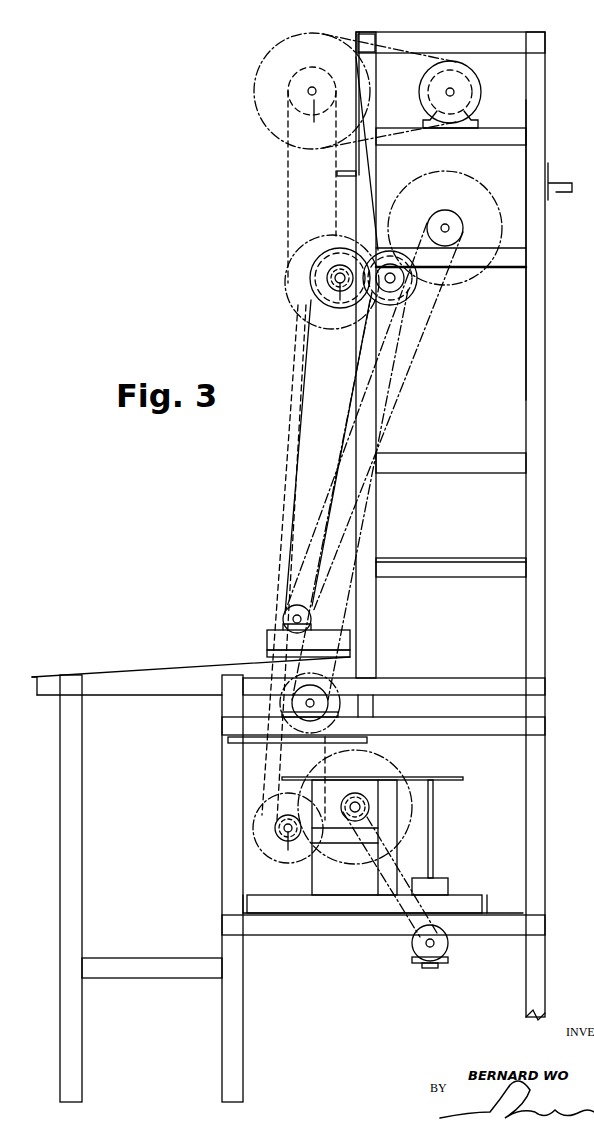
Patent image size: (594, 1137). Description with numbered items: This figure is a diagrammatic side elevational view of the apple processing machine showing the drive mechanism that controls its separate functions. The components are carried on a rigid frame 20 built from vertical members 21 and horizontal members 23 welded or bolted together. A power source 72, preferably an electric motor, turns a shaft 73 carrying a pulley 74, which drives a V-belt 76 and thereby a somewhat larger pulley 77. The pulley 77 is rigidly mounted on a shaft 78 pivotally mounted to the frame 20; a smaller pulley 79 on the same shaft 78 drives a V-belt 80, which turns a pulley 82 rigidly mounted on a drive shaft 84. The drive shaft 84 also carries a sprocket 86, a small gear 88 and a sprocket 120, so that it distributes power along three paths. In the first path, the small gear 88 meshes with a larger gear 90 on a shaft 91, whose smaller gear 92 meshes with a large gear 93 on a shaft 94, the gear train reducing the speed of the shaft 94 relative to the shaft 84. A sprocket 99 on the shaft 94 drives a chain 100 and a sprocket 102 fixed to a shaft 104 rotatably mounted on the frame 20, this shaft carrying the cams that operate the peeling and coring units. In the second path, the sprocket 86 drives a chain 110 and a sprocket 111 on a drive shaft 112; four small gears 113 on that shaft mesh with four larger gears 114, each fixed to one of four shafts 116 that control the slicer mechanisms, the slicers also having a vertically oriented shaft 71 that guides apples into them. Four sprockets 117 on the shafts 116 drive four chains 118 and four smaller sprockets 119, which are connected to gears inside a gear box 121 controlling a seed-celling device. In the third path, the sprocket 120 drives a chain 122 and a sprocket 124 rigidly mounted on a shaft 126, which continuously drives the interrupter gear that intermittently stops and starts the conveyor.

The frame 20 is at (562, 56).
The vertical members 21 is at (538, 282).
The horizontal members 23 is at (455, 42).
The vertically oriented shaft 71 is at (434, 838).
The power source 72 is at (463, 113).
The shaft 73 is at (446, 92).
The pulley 74 is at (468, 90).
The V-belt 76 is at (370, 46).
The pulley 77 is at (318, 42).
The shaft 78 is at (312, 91).
The pulley 79 is at (322, 114).
The V-belt 80 is at (288, 186).
The pulley 82 is at (297, 250).
The drive shaft 84 is at (336, 278).
The sprocket 86 is at (326, 290).
The small gear 88 is at (337, 295).
The larger gear 90 is at (402, 284).
The shaft 91 is at (396, 291).
The smaller gear 92 is at (405, 290).
The large gear 93 is at (472, 180).
The shaft 94 is at (447, 226).
The sprocket 99 is at (455, 226).
The chain 100 is at (392, 420).
The sprocket 102 is at (287, 608).
The shaft 104 is at (292, 619).
The chain 110 is at (292, 458).
The sprocket 111 is at (268, 845).
The drive shaft 112 is at (287, 832).
The small gears 113 is at (285, 826).
The larger gears 114 is at (362, 862).
The shafts 116 is at (362, 806).
The sprockets 117 is at (360, 800).
The chains 118 is at (415, 874).
The smaller sprockets 119 is at (437, 940).
The sprocket 120 is at (345, 250).
The gear box 121 is at (416, 959).
The chain 122 is at (295, 503).
The sprocket 124 is at (295, 683).
The shaft 126 is at (314, 703).